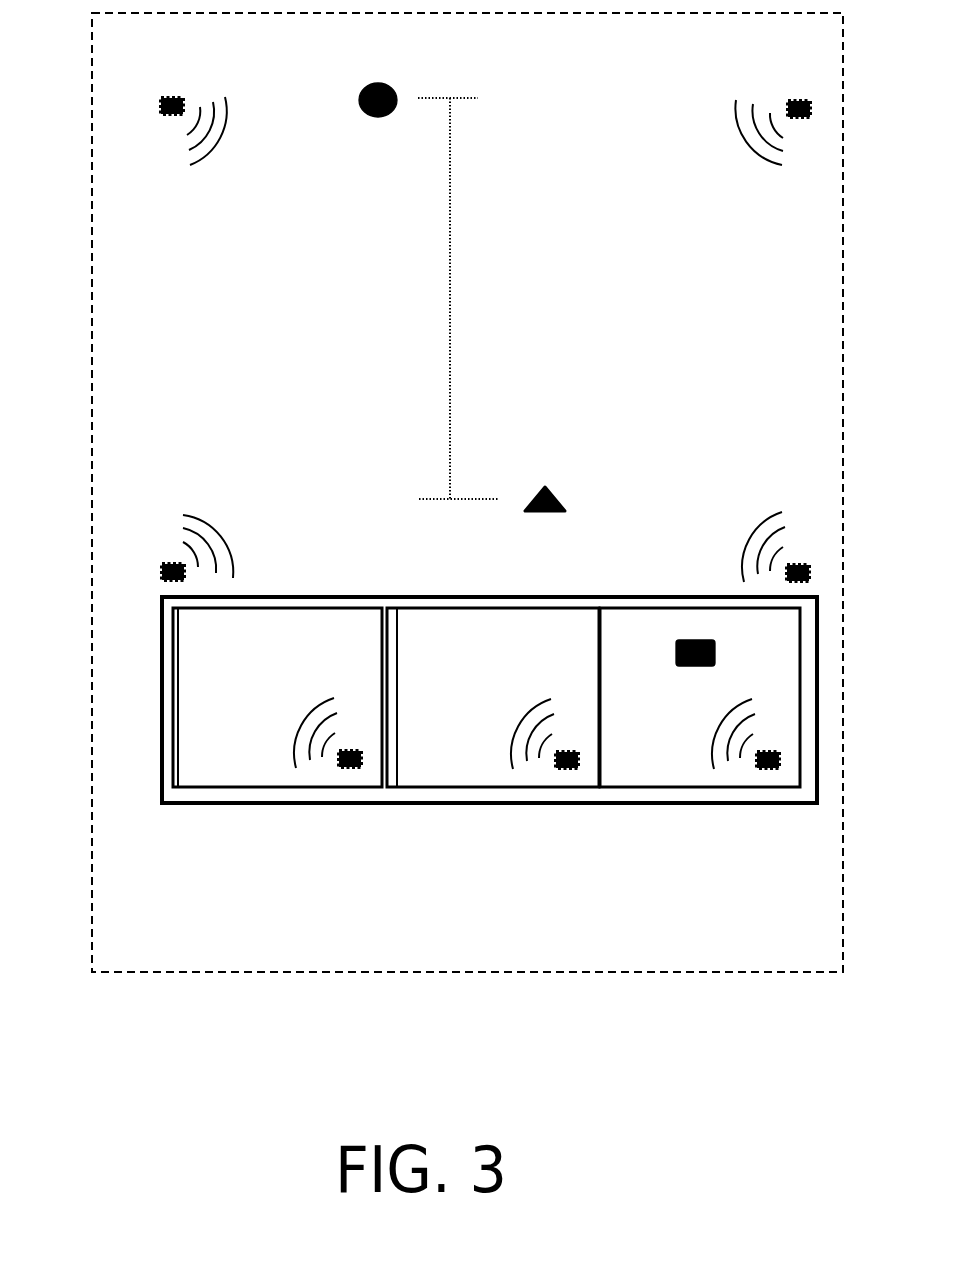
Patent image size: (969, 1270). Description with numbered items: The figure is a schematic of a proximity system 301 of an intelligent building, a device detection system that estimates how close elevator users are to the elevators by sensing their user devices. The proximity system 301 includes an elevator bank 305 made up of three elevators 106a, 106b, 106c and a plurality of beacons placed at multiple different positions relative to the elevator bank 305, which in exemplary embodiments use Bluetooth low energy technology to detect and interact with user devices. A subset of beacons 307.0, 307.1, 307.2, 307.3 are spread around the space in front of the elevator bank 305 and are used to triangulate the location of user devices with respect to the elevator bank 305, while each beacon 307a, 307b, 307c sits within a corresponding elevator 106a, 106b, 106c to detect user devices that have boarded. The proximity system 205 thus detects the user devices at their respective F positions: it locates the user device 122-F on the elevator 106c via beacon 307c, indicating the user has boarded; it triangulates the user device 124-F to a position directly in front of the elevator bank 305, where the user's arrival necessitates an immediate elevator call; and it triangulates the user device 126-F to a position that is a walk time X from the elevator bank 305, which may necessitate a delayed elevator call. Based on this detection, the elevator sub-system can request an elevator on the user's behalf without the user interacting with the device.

The proximity system 301 is at (142, 972).
The elevator bank 305 is at (212, 803).
The proximity system 205 is at (506, 298).
The elevator 106a is at (348, 788).
The elevator 106b is at (503, 788).
The elevator 106c is at (640, 788).
The beacon 307a is at (360, 772).
The beacon 307b is at (567, 772).
The beacon 307c is at (768, 772).
The beacon 307.0 is at (158, 563).
The beacon 307.1 is at (798, 563).
The beacon 307.2 is at (798, 120).
The beacon 307.3 is at (158, 115).
The user device at position F 122-F is at (680, 665).
The user device at position F 124-F is at (537, 512).
The user device at position F 126-F is at (367, 115).